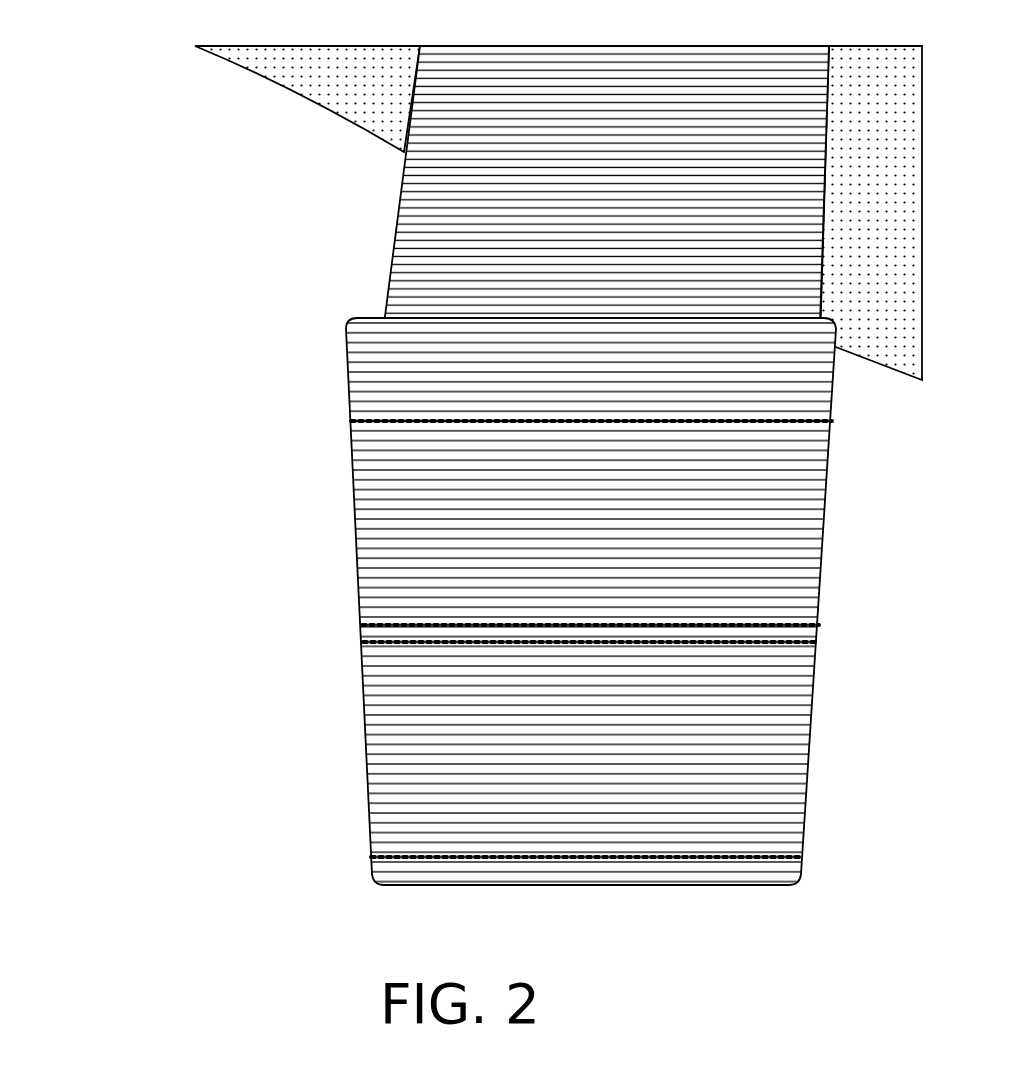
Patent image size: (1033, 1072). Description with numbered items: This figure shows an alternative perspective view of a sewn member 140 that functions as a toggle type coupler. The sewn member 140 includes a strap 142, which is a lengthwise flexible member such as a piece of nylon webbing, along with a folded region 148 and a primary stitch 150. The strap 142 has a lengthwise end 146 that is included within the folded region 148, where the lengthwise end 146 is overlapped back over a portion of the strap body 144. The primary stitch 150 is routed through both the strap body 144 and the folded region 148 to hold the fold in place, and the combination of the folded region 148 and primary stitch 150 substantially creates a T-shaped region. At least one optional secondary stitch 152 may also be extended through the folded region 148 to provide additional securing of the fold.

The sewn member 140 is at (97, 215).
The strap 142 is at (300, 263).
The strap body 144 is at (446, 248).
The lengthwise end 146 is at (457, 335).
The folded region 148 is at (583, 723).
The primary stitch 150 is at (363, 642).
The secondary stitch 152 is at (395, 421).